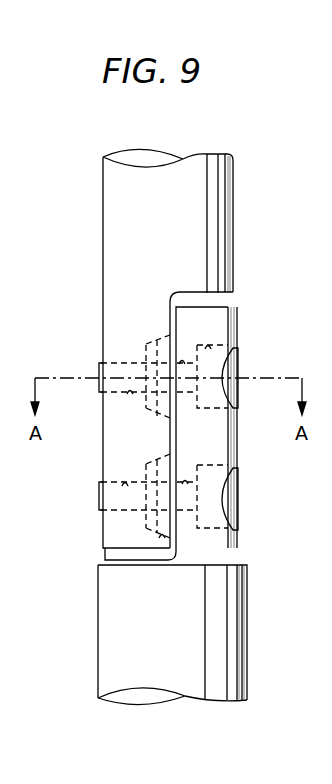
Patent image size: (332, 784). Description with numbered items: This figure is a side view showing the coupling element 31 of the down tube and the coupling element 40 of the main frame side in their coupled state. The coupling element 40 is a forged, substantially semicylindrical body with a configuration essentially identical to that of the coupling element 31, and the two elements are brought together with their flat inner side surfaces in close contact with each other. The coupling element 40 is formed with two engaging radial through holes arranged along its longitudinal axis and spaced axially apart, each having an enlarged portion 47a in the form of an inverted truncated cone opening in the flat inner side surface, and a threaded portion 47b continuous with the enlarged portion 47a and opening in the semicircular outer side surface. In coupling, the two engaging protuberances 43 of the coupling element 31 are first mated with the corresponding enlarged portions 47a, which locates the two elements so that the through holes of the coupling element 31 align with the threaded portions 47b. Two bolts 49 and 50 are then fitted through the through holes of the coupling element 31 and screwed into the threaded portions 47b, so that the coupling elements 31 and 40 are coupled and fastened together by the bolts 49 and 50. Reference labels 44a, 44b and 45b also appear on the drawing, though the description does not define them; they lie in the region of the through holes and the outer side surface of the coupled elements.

The coupling element 40 is at (100, 453).
The enlarged portion 47a is at (160, 342).
The coupling element 31 is at (238, 419).
The bolt 49 is at (228, 372).
The bolt 50 is at (232, 498).
The threaded portion 47b is at (130, 396).
The engaging protuberance 43 is at (146, 345).
The opening 44a is at (218, 342).
The notch 44b is at (188, 345).
The hook 45b is at (186, 478).